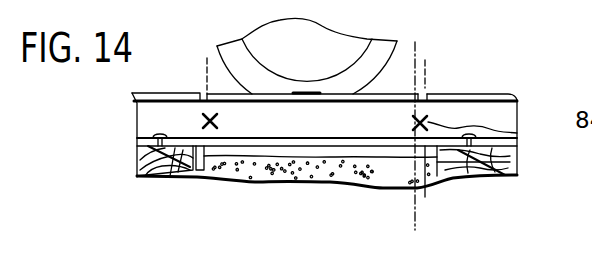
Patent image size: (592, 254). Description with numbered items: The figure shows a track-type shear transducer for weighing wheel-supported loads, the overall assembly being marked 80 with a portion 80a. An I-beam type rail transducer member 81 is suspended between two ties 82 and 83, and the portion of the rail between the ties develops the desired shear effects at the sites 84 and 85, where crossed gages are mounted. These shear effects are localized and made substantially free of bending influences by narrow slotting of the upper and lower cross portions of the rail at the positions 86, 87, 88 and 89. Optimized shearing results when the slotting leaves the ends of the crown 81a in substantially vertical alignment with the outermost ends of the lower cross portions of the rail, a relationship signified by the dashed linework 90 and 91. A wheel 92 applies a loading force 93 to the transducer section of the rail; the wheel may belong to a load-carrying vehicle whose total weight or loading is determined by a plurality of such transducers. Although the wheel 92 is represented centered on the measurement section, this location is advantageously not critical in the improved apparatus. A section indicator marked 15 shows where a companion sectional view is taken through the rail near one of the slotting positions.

The assembly 80 is at (324, 94).
The assembly portion 80a is at (445, 7).
The I-beam type rail transducer member 81 is at (488, 118).
The crown 81a is at (375, 96).
The tie 82 is at (170, 178).
The tie 83 is at (488, 177).
The site of crossed gages 84 is at (203, 121).
The site of crossed gages 85 is at (518, 137).
The slotting position 86 is at (200, 90).
The slotting position 87 is at (425, 88).
The slotting position 88 is at (204, 148).
The slotting position 89 is at (414, 153).
The dashed linework 90 is at (207, 58).
The dashed linework 91 is at (425, 192).
The wheel 92 is at (338, 47).
The loading force 93 is at (305, 86).
The section line 15- 15 is at (415, 50).